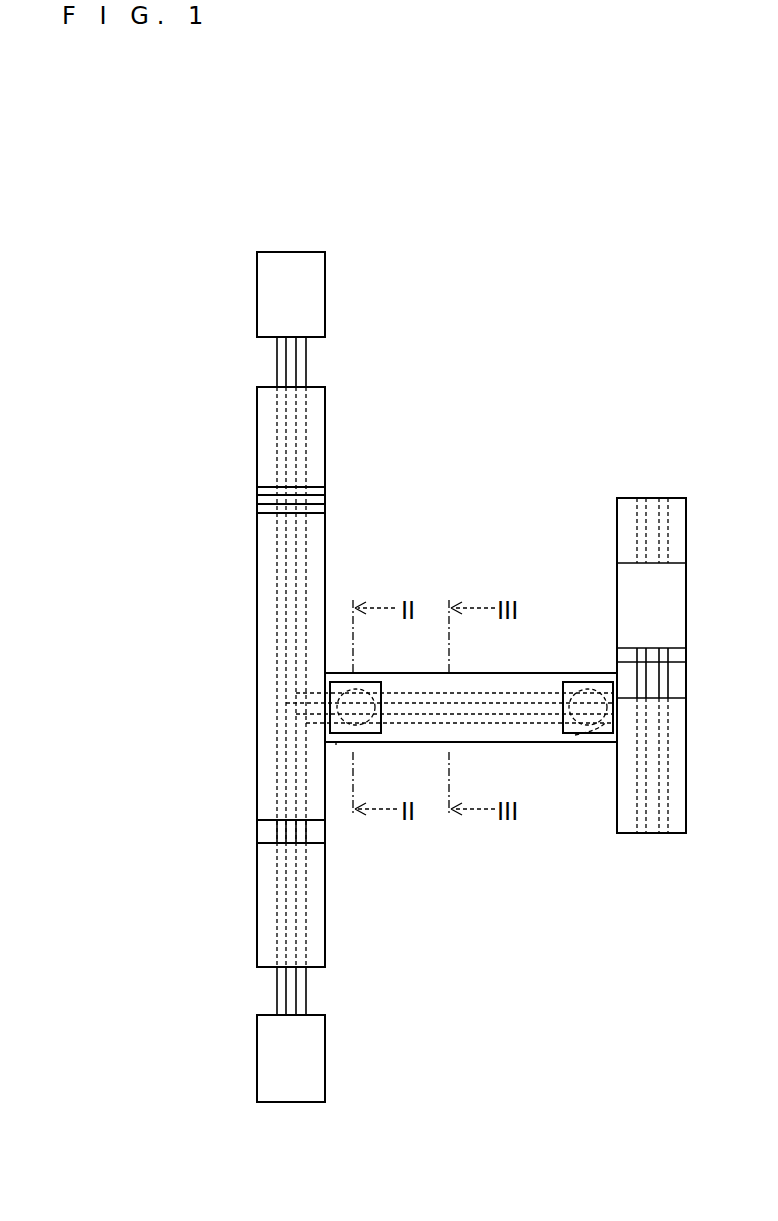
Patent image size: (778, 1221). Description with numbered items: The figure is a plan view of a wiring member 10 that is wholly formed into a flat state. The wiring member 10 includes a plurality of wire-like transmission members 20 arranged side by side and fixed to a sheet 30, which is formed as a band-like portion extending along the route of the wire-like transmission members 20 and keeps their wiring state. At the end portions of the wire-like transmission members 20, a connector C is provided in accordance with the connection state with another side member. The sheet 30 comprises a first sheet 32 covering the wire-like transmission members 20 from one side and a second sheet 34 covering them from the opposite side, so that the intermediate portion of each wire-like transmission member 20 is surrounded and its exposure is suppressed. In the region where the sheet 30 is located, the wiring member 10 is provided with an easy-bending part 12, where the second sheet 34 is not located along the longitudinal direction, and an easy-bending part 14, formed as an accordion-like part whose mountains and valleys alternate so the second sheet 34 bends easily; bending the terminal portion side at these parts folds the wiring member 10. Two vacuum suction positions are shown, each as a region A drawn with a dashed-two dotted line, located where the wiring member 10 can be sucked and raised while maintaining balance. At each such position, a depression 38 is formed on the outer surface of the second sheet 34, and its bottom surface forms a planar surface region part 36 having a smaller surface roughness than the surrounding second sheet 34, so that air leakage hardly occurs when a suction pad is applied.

The wiring member 10 is at (244, 206).
The easy-bending part 12 is at (253, 824).
The easy-bending part 14 is at (248, 500).
The wire-like transmission member 20 is at (281, 355).
The sheet 30 is at (190, 832).
The first sheet 32 is at (262, 835).
The second sheet 34 is at (262, 889).
The planar surface region part 36 is at (338, 681).
The depression 38 is at (602, 735).
The connector C is at (312, 293).
The region A is at (335, 745).